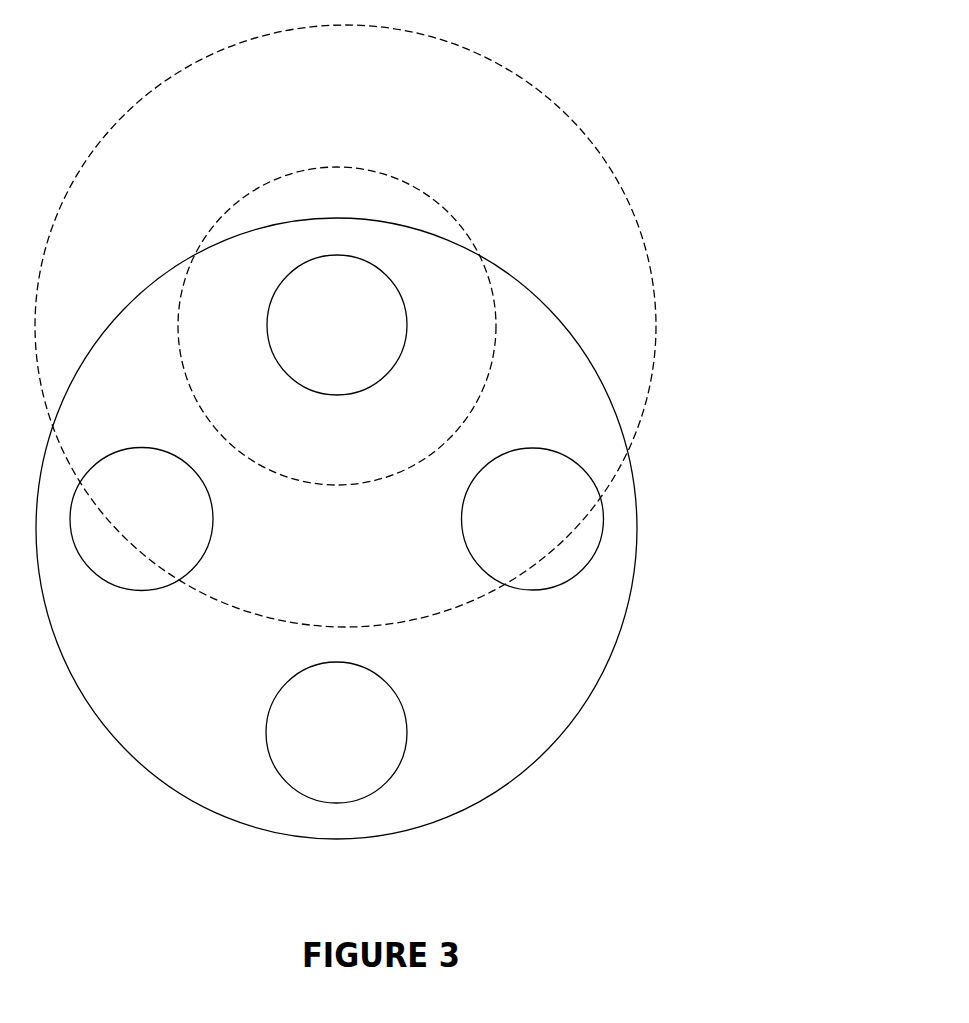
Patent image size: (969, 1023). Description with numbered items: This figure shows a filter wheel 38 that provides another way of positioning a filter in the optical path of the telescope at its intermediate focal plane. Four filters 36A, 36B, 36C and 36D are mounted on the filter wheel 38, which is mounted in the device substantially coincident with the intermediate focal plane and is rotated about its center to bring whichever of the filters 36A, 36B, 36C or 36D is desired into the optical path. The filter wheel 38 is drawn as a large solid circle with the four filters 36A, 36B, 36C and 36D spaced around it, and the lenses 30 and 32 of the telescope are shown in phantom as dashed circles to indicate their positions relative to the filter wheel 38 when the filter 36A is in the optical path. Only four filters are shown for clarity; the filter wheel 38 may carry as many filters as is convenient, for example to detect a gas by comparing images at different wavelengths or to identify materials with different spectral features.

The lens 30 is at (548, 98).
The lens 32 is at (357, 167).
The filter wheel 38 is at (184, 676).
The filter 36A is at (360, 324).
The filter 36B is at (553, 519).
The filter 36C is at (359, 732).
The filter 36D is at (148, 519).